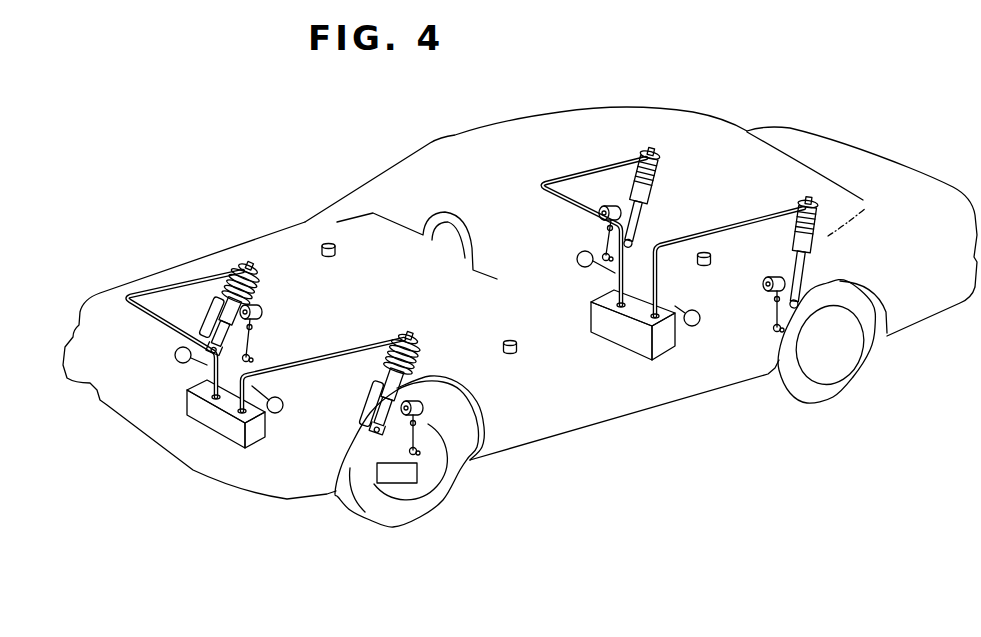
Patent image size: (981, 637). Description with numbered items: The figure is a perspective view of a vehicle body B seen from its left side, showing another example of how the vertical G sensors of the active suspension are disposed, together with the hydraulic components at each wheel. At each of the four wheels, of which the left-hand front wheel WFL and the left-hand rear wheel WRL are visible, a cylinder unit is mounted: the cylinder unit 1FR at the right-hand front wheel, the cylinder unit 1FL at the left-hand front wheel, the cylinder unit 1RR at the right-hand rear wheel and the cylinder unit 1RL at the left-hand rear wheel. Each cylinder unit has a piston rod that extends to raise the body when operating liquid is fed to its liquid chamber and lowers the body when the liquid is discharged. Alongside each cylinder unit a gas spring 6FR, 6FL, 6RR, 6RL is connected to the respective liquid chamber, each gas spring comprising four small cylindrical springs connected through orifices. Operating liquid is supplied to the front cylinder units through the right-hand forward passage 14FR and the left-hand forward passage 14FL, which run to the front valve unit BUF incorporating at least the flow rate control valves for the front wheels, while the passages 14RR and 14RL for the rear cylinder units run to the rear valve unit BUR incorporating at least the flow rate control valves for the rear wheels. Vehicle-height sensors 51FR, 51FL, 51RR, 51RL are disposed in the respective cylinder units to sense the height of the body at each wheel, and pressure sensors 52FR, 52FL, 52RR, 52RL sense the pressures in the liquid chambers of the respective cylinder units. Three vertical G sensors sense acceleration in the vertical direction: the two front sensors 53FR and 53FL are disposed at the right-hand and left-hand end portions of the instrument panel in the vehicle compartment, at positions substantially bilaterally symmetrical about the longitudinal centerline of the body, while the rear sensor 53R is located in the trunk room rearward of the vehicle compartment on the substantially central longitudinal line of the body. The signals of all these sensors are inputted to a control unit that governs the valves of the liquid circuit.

The vehicle body B is at (574, 108).
The cylinder unit 1FR is at (222, 305).
The cylinder unit 1FL is at (410, 382).
The cylinder unit 1RR is at (638, 228).
The cylinder unit 1RL is at (810, 274).
The gas spring 6FR is at (205, 320).
The gas spring 6FL is at (360, 407).
The gas spring 6RR is at (662, 185).
The gas spring 6RL is at (793, 228).
The right-hand forward passage 14FR is at (124, 312).
The left-hand forward passage 14FL is at (356, 348).
The right-hand rearward passage 14RR is at (574, 175).
The left-hand rearward passage 14RL is at (775, 214).
The vehicle-height sensor 51FR is at (263, 313).
The vehicle-height sensor 51FL is at (448, 420).
The vehicle-height sensor 51RR is at (609, 203).
The vehicle-height sensor 51RL is at (757, 302).
The pressure sensor 52FR is at (177, 362).
The pressure sensor 52FL is at (283, 401).
The pressure sensor 52RR is at (577, 260).
The pressure sensor 52RL is at (692, 326).
The vertical G sensor 53FR is at (324, 243).
The vertical G sensor 53FL is at (516, 352).
The vertical G sensor 53R is at (703, 265).
The valve unit BUF is at (208, 422).
The valve unit BUR is at (643, 353).
The left-hand front wheel WFL is at (423, 503).
The left-hand rear wheel WRL is at (845, 380).